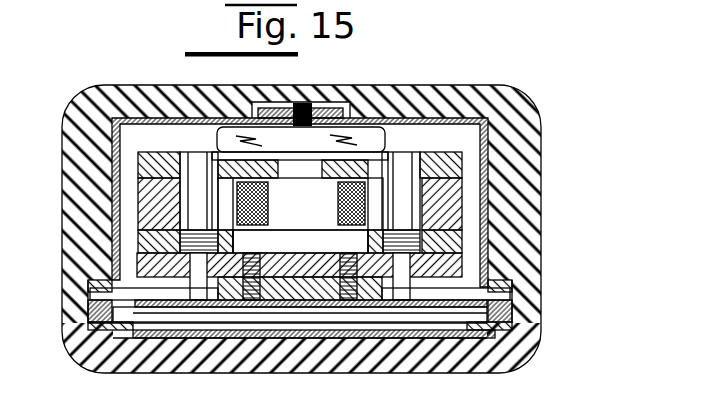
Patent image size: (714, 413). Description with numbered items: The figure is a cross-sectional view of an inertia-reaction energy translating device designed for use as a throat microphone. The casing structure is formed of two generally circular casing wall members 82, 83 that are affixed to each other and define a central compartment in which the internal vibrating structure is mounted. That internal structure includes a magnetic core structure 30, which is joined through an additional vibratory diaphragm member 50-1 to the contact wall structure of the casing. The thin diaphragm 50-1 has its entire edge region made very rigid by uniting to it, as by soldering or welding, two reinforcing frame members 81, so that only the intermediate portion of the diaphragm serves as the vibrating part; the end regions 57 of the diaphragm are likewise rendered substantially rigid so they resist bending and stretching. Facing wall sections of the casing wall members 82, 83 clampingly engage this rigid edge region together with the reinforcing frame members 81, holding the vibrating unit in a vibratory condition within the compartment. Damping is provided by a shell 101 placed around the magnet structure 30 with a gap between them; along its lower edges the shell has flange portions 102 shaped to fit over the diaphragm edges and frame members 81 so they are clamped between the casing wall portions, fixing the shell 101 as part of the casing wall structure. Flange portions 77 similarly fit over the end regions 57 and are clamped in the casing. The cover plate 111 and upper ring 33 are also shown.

The casing wall member 82 is at (538, 150).
The shell 101 is at (513, 190).
The flange portions 102 is at (520, 237).
The casing wall member 83 is at (358, 370).
The cover plate 111 is at (387, 138).
The upper bearing ring 33 is at (352, 167).
The magnetic core structure 30 is at (140, 190).
The additional vibratory diaphragm member 50-1 is at (412, 302).
The flange portions 77 is at (92, 277).
The end regions 57 is at (95, 305).
The reinforcing frame members 81 is at (535, 273).